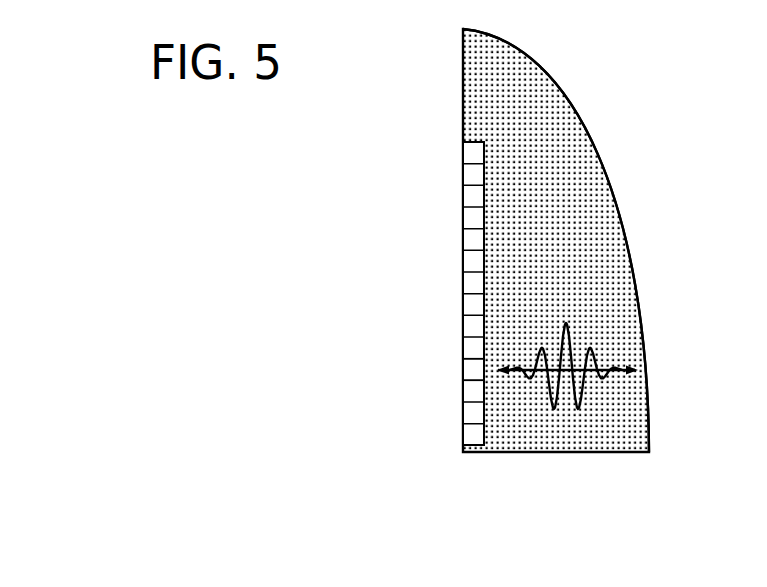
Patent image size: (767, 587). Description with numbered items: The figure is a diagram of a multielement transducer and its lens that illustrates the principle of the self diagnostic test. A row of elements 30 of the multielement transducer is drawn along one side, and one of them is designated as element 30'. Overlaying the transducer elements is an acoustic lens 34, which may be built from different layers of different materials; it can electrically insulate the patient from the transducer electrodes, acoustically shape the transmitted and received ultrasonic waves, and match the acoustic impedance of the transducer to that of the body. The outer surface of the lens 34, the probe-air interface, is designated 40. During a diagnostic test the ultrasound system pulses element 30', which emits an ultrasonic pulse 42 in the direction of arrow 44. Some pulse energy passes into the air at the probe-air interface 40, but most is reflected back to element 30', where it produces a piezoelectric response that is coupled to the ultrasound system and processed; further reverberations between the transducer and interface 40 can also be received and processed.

The elements 30 is at (411, 277).
The element 30' is at (429, 362).
The acoustic lens 34 is at (576, 189).
The probe-air interface 40 is at (646, 335).
The ultrasonic pulse 42 is at (547, 425).
The arrow 44 is at (641, 382).